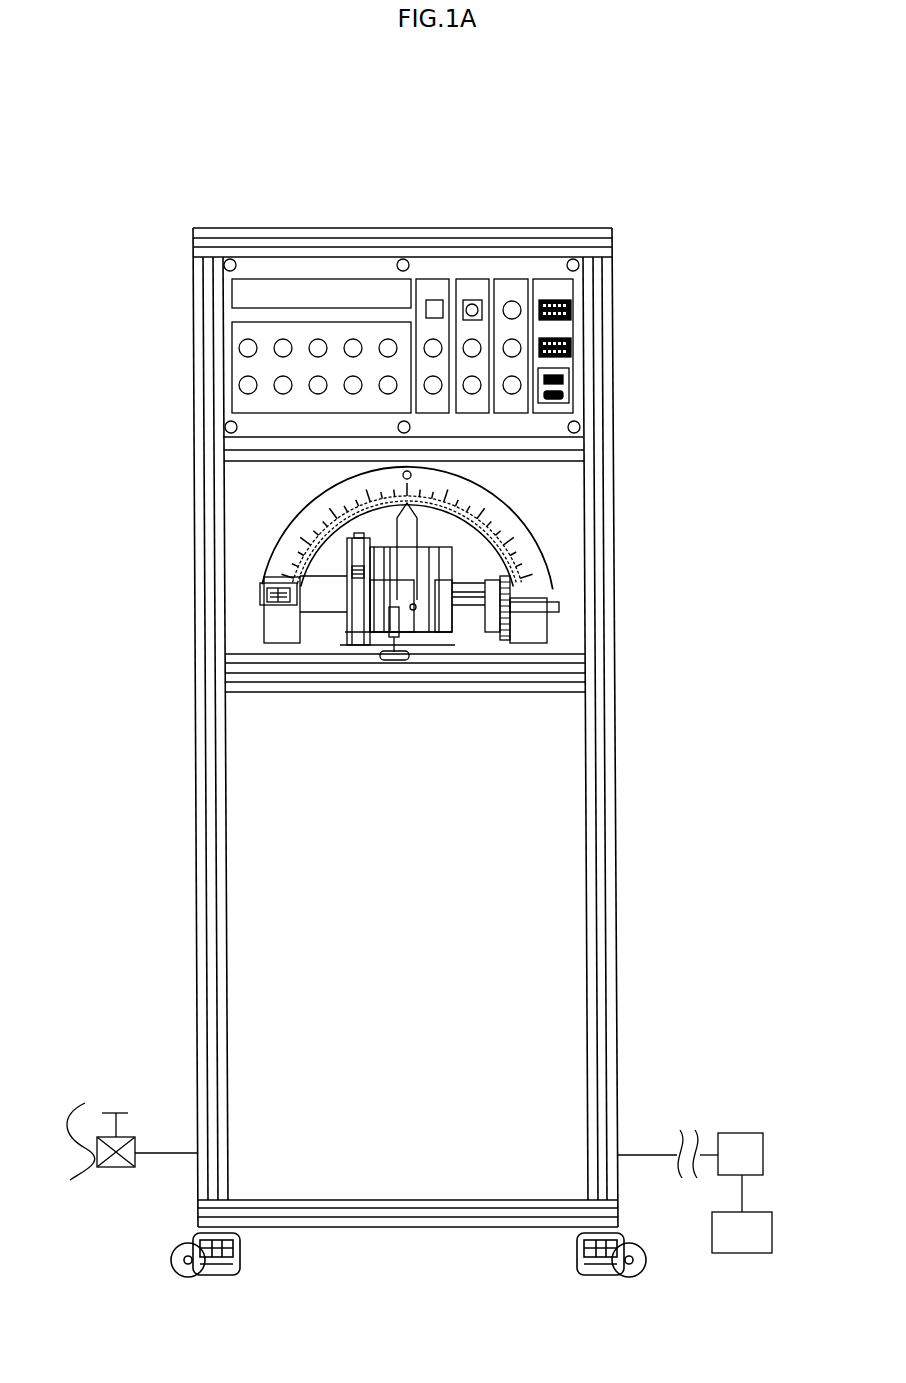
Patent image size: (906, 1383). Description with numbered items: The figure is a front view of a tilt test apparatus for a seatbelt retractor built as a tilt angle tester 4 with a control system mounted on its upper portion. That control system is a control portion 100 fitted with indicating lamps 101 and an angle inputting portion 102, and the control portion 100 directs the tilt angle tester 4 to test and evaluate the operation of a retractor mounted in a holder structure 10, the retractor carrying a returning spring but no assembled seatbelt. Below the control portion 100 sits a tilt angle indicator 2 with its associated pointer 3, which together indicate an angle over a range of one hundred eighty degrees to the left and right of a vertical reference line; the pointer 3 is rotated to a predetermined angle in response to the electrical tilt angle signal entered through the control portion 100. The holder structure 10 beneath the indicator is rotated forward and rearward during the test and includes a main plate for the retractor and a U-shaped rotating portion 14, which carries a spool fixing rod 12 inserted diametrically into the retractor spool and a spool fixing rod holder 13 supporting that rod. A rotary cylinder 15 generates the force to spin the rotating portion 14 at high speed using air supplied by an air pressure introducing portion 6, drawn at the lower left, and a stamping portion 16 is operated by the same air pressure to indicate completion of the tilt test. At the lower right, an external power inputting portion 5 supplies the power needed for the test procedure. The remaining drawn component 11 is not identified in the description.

The tilt angle indicator 2 is at (485, 502).
The pointer 3 is at (402, 530).
The tilt angle tester 4 is at (650, 397).
The external power inputting portion 5 is at (745, 1143).
The air pressure introducing portion 6 is at (110, 1173).
The holder structure 10 is at (425, 643).
The main body 11 is at (435, 567).
The spool fixing rod 12 is at (394, 594).
The spool fixing rod holder 13 is at (373, 663).
The U-shaped rotating portion 14 is at (348, 636).
The rotary cylinder 15 is at (262, 580).
The stamping portion 16 is at (487, 614).
The control portion 100 is at (222, 368).
The indicating lamps 101 is at (313, 344).
The angle inputting portion 102 is at (573, 292).